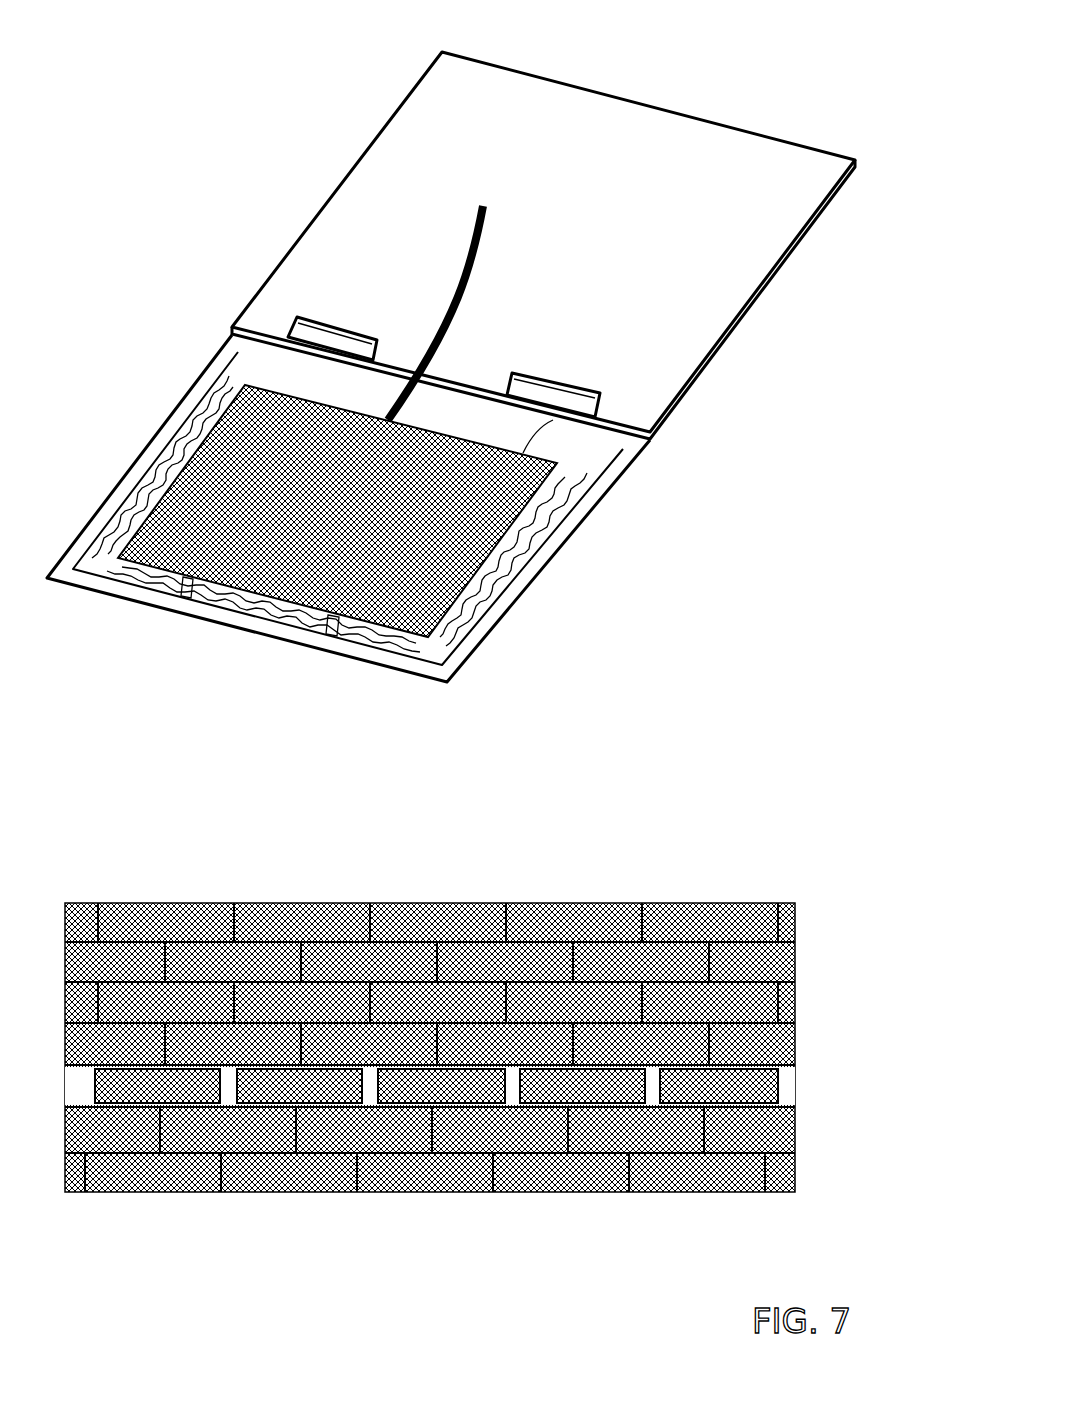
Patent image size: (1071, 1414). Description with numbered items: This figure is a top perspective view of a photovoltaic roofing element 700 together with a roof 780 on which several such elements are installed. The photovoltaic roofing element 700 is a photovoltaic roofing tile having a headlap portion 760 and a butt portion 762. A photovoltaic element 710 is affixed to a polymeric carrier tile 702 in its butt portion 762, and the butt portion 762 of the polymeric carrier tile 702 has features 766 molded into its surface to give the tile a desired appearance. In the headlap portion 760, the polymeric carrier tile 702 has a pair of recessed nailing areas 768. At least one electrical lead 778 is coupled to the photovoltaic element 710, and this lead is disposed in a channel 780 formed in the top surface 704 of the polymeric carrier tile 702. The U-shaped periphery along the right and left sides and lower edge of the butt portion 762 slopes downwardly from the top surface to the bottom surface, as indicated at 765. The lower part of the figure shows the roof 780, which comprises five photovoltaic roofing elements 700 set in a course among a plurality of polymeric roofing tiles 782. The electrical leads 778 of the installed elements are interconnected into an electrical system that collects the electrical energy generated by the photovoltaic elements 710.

The photovoltaic roofing element 700 is at (465, 651).
The polymeric carrier tile 702 is at (310, 265).
The top surface 704 is at (468, 427).
The photovoltaic element 710 is at (335, 573).
The headlap portion 760 is at (552, 249).
The butt portion 762 is at (398, 520).
The downwardly sloping periphery 765 is at (131, 617).
The features 766 is at (163, 432).
The recessed nailing areas 768 is at (307, 337).
The electrical lead 778 is at (470, 250).
The channel / roof 780 is at (464, 754).
The polymeric roofing tiles 782 is at (723, 998).